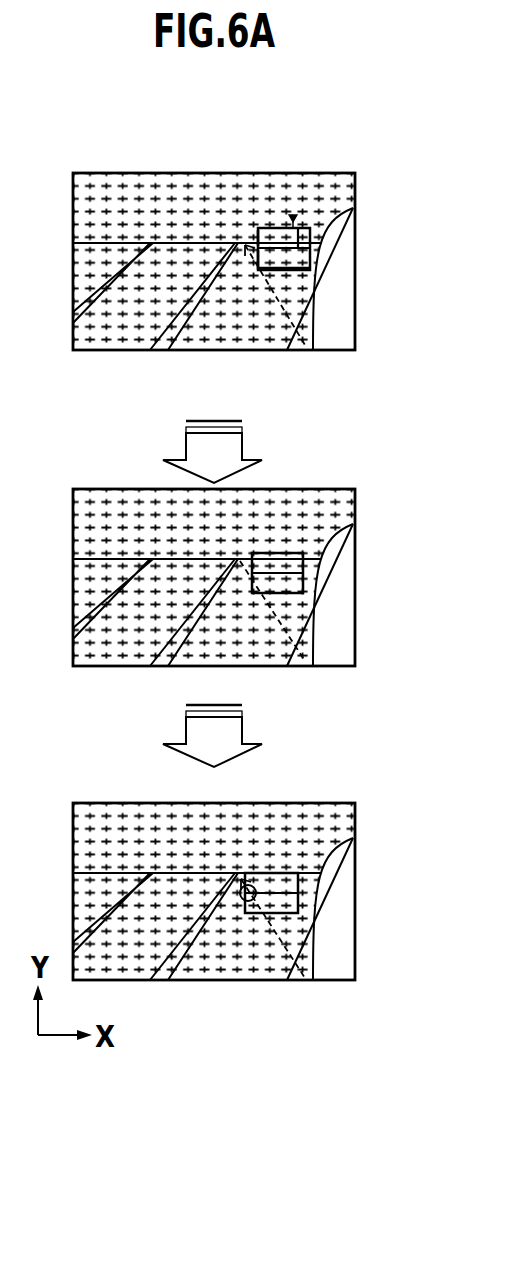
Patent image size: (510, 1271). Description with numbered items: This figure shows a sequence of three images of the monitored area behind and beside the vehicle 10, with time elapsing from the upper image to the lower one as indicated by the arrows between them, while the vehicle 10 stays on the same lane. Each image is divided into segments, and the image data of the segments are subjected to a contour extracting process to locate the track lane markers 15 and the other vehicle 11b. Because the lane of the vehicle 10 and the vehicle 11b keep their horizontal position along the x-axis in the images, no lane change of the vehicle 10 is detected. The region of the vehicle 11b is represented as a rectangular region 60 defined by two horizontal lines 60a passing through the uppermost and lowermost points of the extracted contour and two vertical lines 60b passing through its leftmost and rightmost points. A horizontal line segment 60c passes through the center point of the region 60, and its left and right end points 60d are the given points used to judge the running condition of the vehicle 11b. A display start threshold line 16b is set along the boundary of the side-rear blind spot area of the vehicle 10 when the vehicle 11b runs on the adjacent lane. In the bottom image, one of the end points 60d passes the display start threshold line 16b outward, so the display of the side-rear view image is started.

The vehicle 10 is at (328, 350).
The vehicle 11b is at (258, 228).
The track lane markers 15 is at (165, 331).
The display start threshold line 16b is at (263, 350).
The rectangular region 60 is at (287, 228).
The horizontal lines 60a is at (293, 216).
The vertical lines 60b is at (310, 258).
The horizontal line segment 60c is at (302, 228).
The left and right end points 60d is at (245, 250).